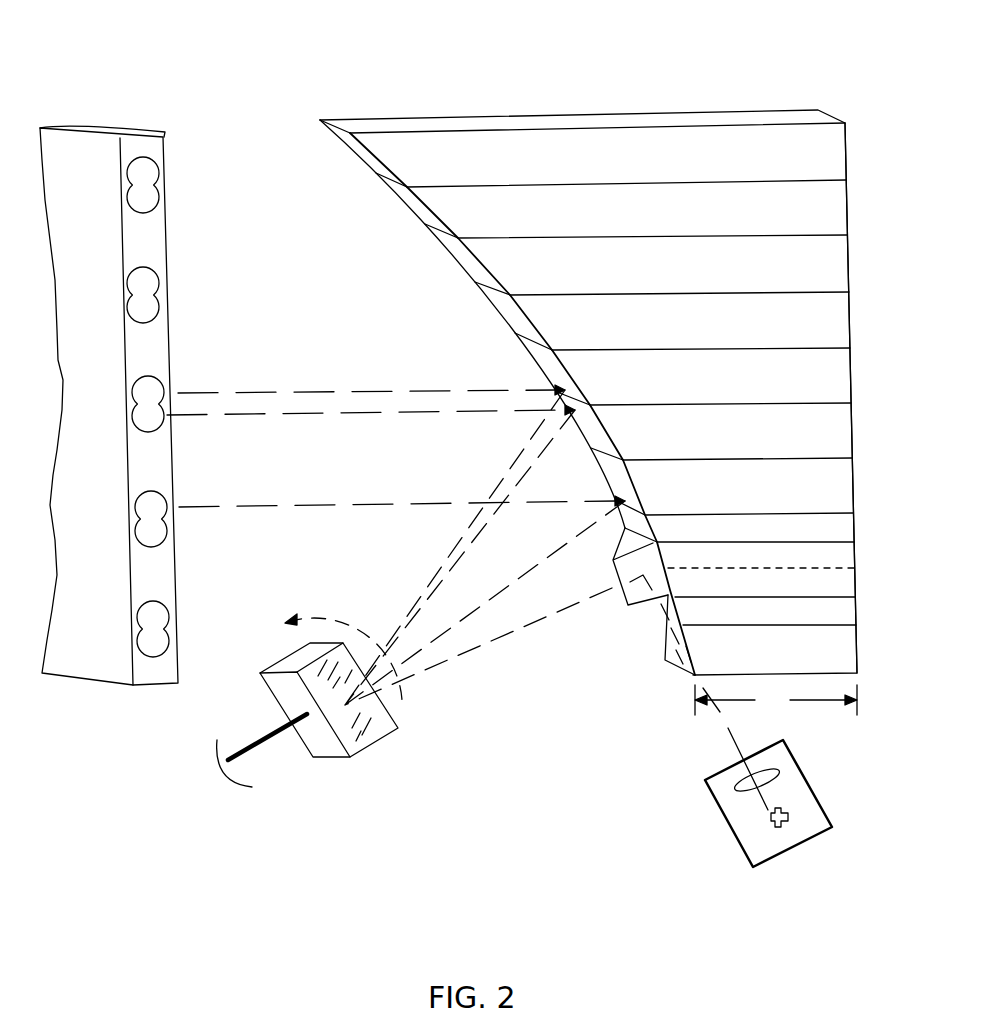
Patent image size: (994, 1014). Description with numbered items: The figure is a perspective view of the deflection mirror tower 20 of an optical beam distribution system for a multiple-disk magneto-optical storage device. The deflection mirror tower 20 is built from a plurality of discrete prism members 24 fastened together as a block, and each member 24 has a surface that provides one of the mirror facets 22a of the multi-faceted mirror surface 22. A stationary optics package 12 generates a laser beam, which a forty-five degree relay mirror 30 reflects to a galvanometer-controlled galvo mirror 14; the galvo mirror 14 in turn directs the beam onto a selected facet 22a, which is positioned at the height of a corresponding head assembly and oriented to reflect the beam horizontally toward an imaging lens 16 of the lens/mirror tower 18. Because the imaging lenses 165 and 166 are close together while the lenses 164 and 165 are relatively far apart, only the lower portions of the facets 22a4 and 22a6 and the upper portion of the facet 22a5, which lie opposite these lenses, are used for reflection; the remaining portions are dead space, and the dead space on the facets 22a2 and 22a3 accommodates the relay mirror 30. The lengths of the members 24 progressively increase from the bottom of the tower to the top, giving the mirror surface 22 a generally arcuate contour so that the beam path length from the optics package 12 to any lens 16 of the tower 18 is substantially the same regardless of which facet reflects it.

The stationary optics package 12 is at (817, 790).
The galvo mirror 14 is at (373, 745).
The imaging lens 16 is at (175, 404).
The imaging lens 166 is at (145, 374).
The imaging lens 165 is at (143, 433).
The imaging lens 164 is at (139, 496).
The lens/mirror tower 18 is at (132, 361).
The deflection mirror tower 20 is at (615, 385).
The multi-faceted mirror surface 22 is at (410, 216).
The mirror facet 22a is at (588, 372).
The mirror facet 22a6 is at (701, 372).
The mirror facet 22a5 is at (720, 427).
The mirror facet 22a4 is at (737, 482).
The mirror facet 22a3 is at (756, 559).
The mirror facet 22a2 is at (765, 584).
The prism member 24 is at (852, 373).
The relay mirror 30 is at (628, 605).